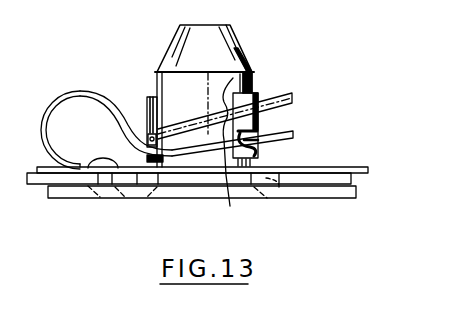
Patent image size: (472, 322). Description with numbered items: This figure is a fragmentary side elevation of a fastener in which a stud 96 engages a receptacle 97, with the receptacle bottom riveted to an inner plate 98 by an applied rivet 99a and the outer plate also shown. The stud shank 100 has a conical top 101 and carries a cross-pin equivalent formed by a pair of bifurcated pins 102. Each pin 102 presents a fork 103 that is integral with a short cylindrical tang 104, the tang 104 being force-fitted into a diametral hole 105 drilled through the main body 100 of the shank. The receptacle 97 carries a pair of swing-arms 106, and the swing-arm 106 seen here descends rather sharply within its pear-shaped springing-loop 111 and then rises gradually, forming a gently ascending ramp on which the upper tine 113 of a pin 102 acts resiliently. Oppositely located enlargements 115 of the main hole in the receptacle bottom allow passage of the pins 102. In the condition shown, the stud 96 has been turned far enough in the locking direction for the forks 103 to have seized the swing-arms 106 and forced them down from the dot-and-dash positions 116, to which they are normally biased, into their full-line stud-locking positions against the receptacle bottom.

The stud 96 is at (258, 82).
The receptacle 97 is at (97, 90).
The base plate 98 is at (319, 177).
The applied rivet 99a is at (103, 159).
The stud shank 100 is at (175, 87).
The conical top 101 is at (236, 44).
The bifurcated pin 102 is at (264, 122).
The fork 103 is at (266, 142).
The cylindrical tang 104 is at (232, 152).
The diametral hole 105 is at (250, 80).
The swing-arm 106 is at (146, 138).
The pear-shaped springing-loop 111 is at (62, 97).
The upper tine 113 is at (285, 110).
The enlargements of main hole 115 is at (283, 201).
The dot-and-dash positions 116 is at (209, 78).